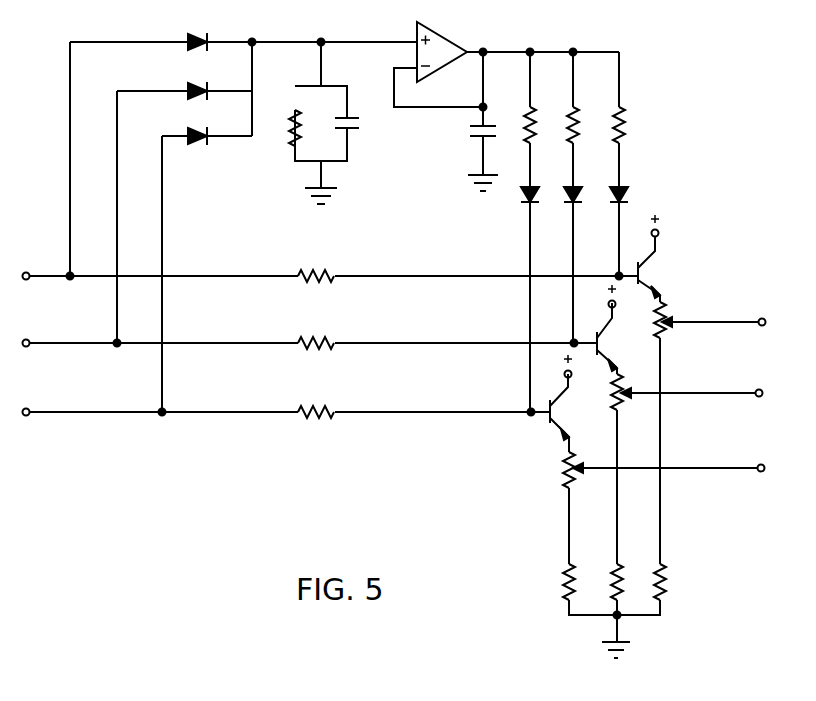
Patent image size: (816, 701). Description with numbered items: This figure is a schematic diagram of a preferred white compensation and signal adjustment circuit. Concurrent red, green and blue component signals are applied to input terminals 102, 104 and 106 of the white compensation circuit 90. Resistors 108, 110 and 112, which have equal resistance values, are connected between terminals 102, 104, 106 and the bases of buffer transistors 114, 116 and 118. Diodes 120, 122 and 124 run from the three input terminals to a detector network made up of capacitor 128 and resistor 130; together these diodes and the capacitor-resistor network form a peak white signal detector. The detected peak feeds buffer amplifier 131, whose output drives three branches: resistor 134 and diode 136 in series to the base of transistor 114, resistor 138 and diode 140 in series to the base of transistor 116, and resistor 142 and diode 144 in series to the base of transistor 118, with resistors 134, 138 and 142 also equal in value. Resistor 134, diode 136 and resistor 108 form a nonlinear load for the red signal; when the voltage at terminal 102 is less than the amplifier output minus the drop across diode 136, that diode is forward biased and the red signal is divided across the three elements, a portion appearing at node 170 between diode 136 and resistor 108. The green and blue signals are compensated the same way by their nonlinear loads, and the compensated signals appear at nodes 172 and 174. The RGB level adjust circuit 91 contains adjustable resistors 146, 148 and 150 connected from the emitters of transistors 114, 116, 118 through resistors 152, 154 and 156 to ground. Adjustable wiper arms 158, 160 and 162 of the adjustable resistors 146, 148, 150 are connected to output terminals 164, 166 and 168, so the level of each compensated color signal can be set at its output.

The white compensation circuit 90 is at (229, 422).
The RGB level adjust circuit 91 is at (700, 226).
The input terminal 102 is at (29, 280).
The input terminal 104 is at (29, 347).
The input terminal 106 is at (29, 416).
The resistor 108 is at (316, 272).
The resistor 110 is at (316, 338).
The resistor 112 is at (314, 408).
The buffer transistor 114 is at (664, 269).
The buffer transistor 116 is at (606, 349).
The buffer transistor 118 is at (568, 412).
The diode 120 is at (186, 35).
The diode 122 is at (188, 86).
The diode 124 is at (188, 131).
The capacitor 128 is at (362, 126).
The resistor 130 is at (291, 135).
The buffer amplifier 131 is at (445, 38).
The resistor 134 is at (630, 113).
The diode 136 is at (627, 191).
The resistor 138 is at (578, 113).
The diode 140 is at (579, 191).
The resistor 142 is at (535, 113).
The diode 144 is at (537, 191).
The adjustable resistor 146 is at (676, 334).
The adjustable resistor 148 is at (625, 410).
The adjustable resistor 150 is at (562, 478).
The resistor 152 is at (671, 568).
The resistor 154 is at (626, 568).
The resistor 156 is at (579, 568).
The adjustable wiper arm 158 is at (672, 320).
The adjustable wiper arm 160 is at (625, 390).
The adjustable wiper arm 162 is at (574, 470).
The output terminal 164 is at (762, 319).
The output terminal 166 is at (760, 391).
The output terminal 168 is at (758, 464).
The node 170 is at (617, 275).
The node 172 is at (572, 342).
The node 174 is at (526, 409).